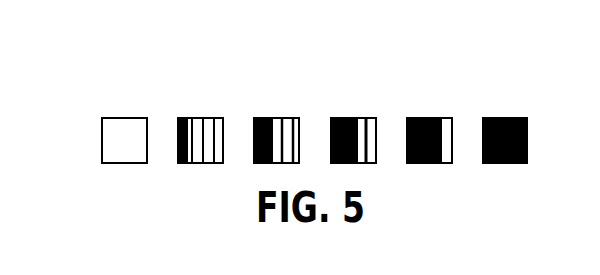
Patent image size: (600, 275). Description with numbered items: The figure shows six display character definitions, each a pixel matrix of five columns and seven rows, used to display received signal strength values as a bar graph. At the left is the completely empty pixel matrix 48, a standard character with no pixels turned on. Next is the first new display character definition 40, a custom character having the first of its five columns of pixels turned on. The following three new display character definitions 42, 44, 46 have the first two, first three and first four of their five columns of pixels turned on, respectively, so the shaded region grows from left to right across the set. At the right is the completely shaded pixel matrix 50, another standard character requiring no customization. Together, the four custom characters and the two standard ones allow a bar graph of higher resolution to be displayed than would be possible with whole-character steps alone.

The completely empty pixel matrix 48 is at (125, 118).
The first new display character definition 40 is at (202, 118).
The second new display character definition 42 is at (278, 118).
The third new display character definition 44 is at (355, 118).
The fourth new display character definition 46 is at (431, 118).
The completely shaded pixel matrix 50 is at (508, 118).